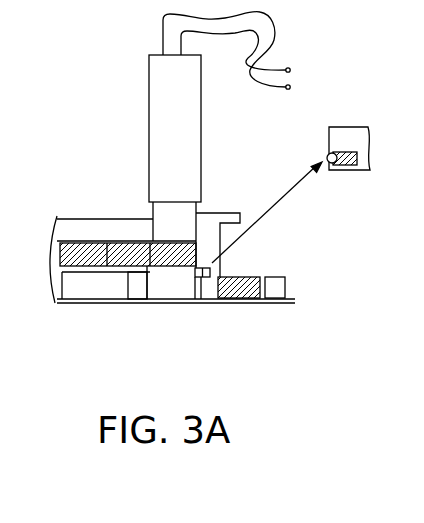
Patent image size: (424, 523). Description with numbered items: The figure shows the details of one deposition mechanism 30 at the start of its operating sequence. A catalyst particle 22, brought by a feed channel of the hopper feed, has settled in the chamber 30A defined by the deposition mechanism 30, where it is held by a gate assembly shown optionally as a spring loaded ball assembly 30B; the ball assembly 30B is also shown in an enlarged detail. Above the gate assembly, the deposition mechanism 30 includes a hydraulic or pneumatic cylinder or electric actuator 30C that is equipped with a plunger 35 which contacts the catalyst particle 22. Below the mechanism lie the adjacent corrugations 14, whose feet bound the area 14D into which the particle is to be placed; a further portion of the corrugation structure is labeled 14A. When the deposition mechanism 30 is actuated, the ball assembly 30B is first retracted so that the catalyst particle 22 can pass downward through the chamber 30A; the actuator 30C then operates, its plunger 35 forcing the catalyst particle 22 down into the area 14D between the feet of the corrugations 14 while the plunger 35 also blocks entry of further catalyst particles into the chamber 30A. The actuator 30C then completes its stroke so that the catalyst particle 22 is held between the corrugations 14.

The deposition mechanism 30 is at (180, 107).
The hydraulic or pneumatic cylinder or electric actuator 30C is at (202, 100).
The chamber 30A is at (200, 242).
The spring loaded ball assembly 30B is at (346, 152).
The plunger 35 is at (157, 213).
The catalyst particle 22 is at (238, 278).
The corrugations 14 is at (82, 305).
The base support 14A is at (137, 303).
The area between the feet of adjacent corrugations 14D is at (187, 303).